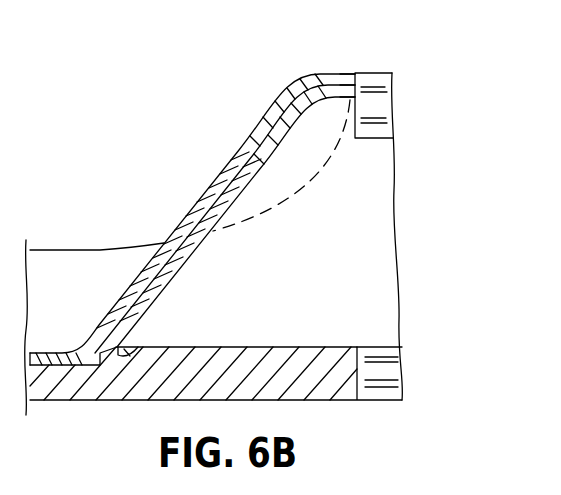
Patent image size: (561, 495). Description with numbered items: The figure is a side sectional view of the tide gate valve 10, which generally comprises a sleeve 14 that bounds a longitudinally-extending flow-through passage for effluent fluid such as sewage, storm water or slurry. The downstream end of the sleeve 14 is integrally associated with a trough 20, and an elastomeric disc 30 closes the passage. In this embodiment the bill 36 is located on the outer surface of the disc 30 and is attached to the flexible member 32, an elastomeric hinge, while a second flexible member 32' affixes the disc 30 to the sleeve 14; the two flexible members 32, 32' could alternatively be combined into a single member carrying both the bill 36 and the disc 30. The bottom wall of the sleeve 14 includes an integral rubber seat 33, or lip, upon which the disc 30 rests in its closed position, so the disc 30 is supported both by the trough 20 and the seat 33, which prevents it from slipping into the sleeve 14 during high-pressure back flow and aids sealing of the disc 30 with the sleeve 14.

The valve 10 is at (168, 157).
The sleeve 14 is at (373, 128).
The trough 20 is at (113, 402).
The disc 30 is at (189, 257).
The flexible member 32 is at (288, 94).
The second flexible member 32' is at (364, 52).
The integral rubber seat 33 is at (141, 349).
The bill 36 is at (249, 137).